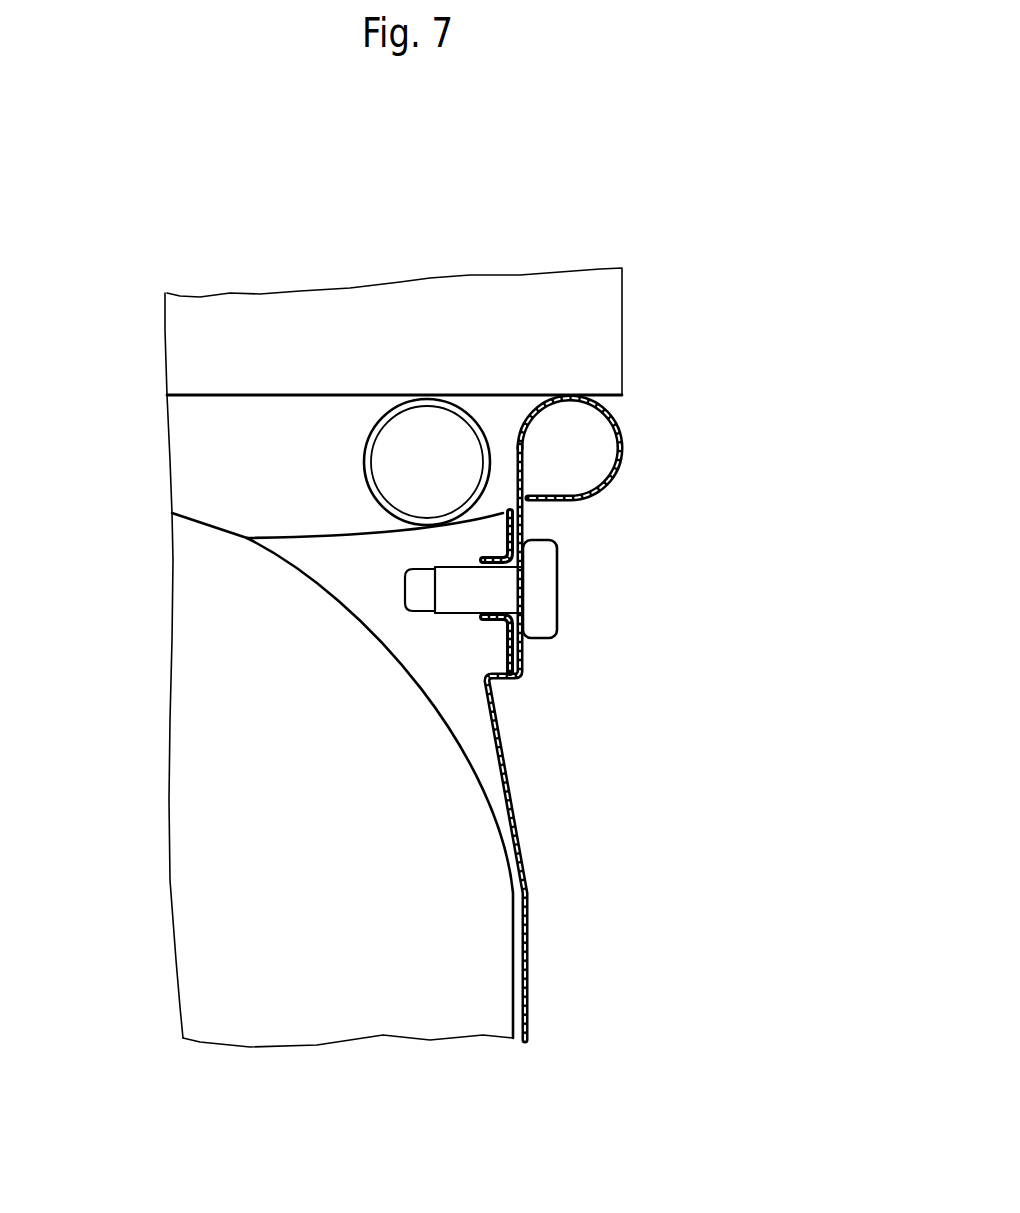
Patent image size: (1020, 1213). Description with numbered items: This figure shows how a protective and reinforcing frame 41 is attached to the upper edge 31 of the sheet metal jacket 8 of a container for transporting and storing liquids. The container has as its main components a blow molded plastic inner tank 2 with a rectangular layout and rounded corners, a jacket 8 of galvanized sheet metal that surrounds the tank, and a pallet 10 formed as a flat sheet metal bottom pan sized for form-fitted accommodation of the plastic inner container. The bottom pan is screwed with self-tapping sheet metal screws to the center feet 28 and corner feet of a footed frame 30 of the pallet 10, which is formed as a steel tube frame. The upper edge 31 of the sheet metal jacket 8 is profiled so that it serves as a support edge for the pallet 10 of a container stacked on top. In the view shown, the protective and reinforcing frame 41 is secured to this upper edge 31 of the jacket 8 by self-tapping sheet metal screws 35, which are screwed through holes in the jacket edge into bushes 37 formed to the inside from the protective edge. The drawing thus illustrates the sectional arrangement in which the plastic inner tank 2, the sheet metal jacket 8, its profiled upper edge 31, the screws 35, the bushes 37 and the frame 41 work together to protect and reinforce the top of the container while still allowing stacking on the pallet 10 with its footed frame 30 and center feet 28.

The plastic inner tank 2 is at (237, 770).
The jacket 8 is at (512, 827).
The pallet 10 is at (437, 243).
The center feet 28 is at (531, 331).
The footed frame 30 is at (370, 462).
The upper edge 31 is at (620, 432).
The self-tapping sheet metal screws 35 is at (543, 592).
The bushes 37 is at (497, 625).
The protective and reinforcing frame 41 is at (370, 580).